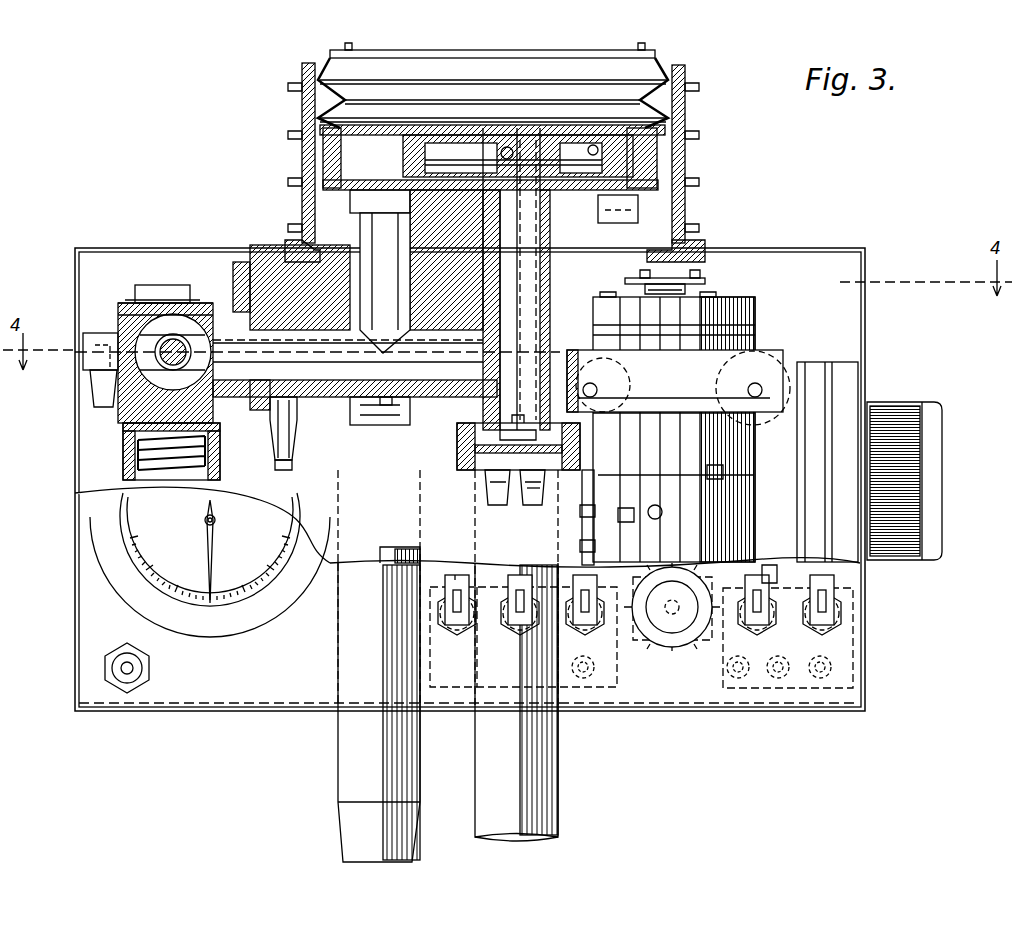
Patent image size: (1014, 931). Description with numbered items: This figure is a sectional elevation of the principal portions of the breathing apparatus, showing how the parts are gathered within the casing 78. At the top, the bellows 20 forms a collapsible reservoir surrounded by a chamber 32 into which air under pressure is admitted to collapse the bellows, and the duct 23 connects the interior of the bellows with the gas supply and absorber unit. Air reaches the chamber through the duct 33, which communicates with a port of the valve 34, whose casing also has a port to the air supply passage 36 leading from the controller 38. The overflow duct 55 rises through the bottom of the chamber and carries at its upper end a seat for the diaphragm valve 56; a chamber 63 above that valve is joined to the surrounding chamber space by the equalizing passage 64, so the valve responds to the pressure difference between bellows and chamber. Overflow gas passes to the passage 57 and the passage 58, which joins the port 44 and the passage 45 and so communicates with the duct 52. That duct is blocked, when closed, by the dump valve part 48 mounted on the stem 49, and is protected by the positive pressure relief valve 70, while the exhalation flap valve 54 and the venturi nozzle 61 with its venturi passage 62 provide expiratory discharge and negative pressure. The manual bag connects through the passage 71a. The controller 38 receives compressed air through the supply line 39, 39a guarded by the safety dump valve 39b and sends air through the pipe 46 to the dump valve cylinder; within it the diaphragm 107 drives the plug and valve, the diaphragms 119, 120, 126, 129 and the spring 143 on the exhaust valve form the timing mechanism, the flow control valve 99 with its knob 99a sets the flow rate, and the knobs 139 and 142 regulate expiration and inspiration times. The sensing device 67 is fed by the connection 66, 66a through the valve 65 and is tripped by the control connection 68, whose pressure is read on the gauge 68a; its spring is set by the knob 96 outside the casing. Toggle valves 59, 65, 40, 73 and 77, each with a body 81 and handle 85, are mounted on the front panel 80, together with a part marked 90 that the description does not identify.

The bellows 20 is at (686, 103).
The duct 23 is at (558, 789).
The chamber 32 is at (664, 158).
The duct or passage 33 is at (360, 222).
The valve 34 is at (235, 249).
The air supply passage 36 is at (283, 470).
The controller 38 is at (769, 311).
The supply line 39 is at (487, 492).
The supply line 39a is at (530, 498).
The safety dump valve 39b is at (470, 458).
The shut-off valve 40 is at (582, 632).
The port 44 is at (318, 400).
The passage 45 is at (345, 265).
The pipe 46 is at (622, 522).
The valve part 48 is at (150, 372).
The stem 49 is at (135, 410).
The duct 52 is at (260, 412).
The expiration valve 54 is at (150, 298).
The duct 55 is at (517, 240).
The diaphragm valve 56 is at (578, 142).
The passage 57 is at (465, 398).
The passage 58 is at (425, 400).
The valve 59 is at (758, 638).
The nozzle 61 is at (115, 318).
The venturi passage 62 is at (115, 305).
The chamber 63 is at (537, 145).
The balancing or equalizing passage 64 is at (636, 212).
The valve 65 is at (825, 635).
The connection 66 is at (588, 512).
The connection 66a is at (707, 472).
The control device 67 is at (848, 380).
The control connection 68 is at (768, 565).
The pressure gauge 68a is at (115, 543).
The positive pressure relief valve 70 is at (123, 447).
The passage 71a is at (337, 750).
The valve 73 is at (520, 637).
The discharge valve 77 is at (443, 615).
The casing 78 is at (75, 262).
The front panel 80 is at (330, 562).
The body 81 is at (460, 700).
The toggle-operated handle 85 is at (456, 577).
The adjusting screw 90 is at (825, 372).
The knob 96 is at (912, 562).
The flow control valve 99 is at (660, 650).
The operating knob 99a is at (678, 650).
The diaphragm 107 is at (660, 497).
The flexible diaphragm 119 is at (650, 416).
The diaphragm 120 is at (645, 412).
The flexible diaphragm 126 is at (770, 350).
The diaphragm 129 is at (758, 332).
The knob 139 is at (790, 372).
The knob 142 is at (628, 380).
The spring 143 is at (705, 270).